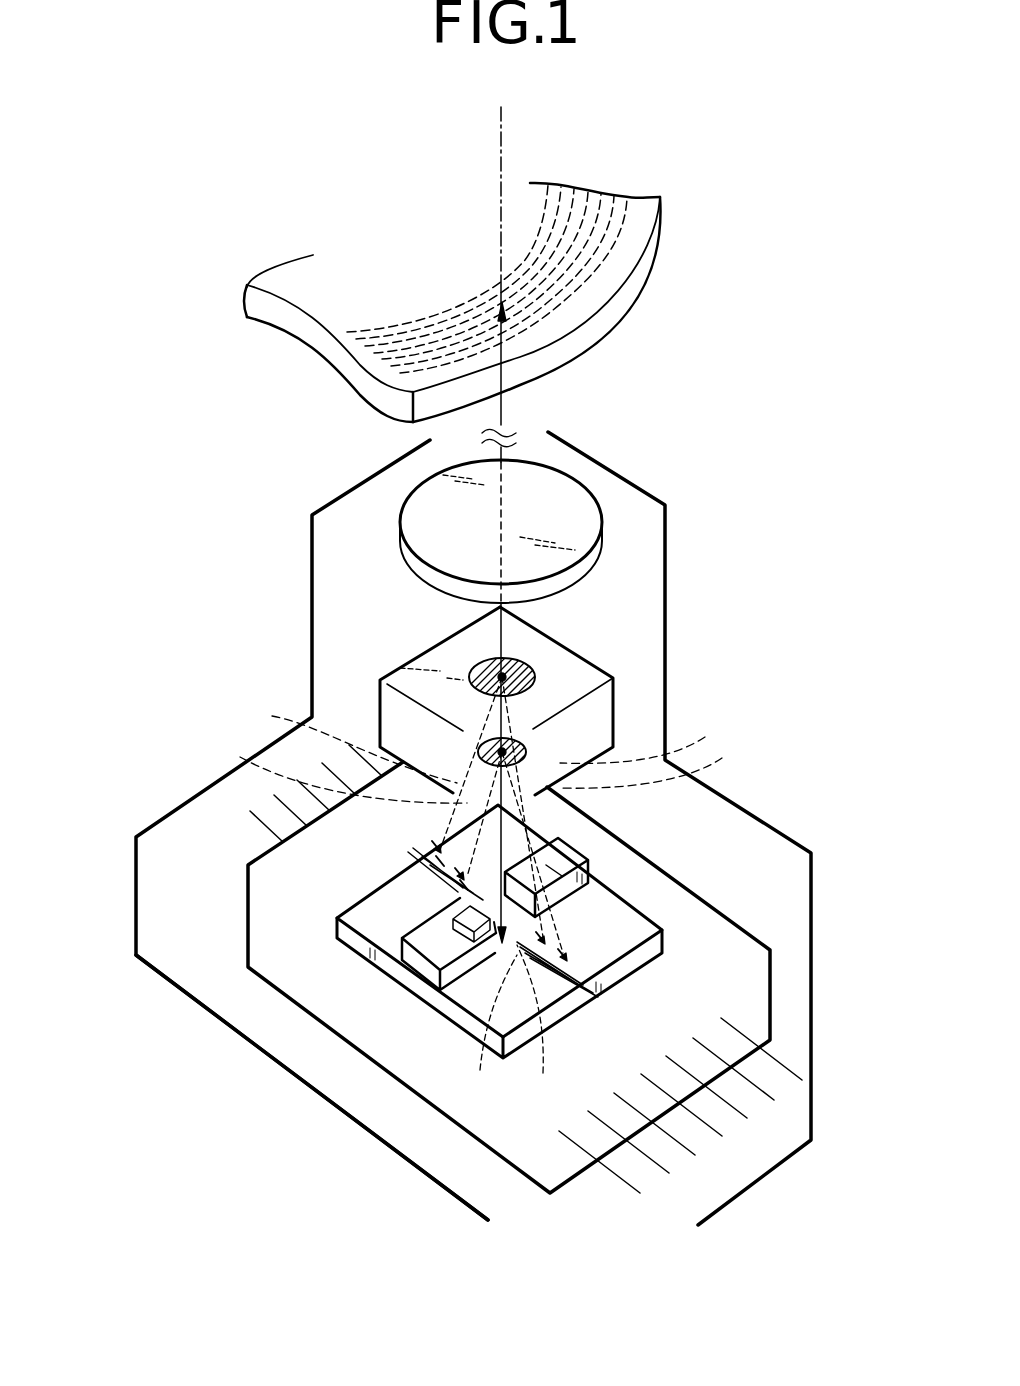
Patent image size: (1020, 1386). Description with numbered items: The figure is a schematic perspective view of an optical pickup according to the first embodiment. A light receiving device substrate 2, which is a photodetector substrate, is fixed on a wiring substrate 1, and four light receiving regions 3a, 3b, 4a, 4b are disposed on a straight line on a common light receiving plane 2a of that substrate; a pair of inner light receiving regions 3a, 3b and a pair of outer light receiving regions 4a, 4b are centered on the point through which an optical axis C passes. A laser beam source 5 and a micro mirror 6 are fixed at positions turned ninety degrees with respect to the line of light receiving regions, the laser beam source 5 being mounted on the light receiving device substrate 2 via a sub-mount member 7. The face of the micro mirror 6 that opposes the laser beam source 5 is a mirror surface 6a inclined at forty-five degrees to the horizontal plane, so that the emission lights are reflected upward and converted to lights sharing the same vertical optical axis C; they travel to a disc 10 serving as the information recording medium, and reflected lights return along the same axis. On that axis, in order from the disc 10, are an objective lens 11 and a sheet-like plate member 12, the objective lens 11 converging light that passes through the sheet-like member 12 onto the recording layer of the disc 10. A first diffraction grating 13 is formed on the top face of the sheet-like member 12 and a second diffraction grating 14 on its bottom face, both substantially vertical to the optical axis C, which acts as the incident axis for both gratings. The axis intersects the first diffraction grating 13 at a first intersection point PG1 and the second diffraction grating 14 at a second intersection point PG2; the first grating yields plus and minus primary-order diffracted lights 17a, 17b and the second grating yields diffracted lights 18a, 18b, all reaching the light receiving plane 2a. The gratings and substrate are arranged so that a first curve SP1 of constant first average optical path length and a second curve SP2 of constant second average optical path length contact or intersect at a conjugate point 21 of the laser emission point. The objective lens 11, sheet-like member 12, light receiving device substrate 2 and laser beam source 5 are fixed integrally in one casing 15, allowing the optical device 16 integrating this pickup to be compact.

The wiring substrate 1 is at (513, 1133).
The light receiving device substrate 2 is at (345, 928).
The light receiving plane 2a is at (387, 917).
The inner light receiving region 3a is at (545, 945).
The inner light receiving region 3b is at (445, 908).
The outer light receiving region 4a is at (577, 970).
The outer light receiving region 4b is at (430, 848).
The laser beam source 5 is at (500, 945).
The micro mirror 6 is at (567, 852).
The mirror surface 6a is at (560, 927).
The sub-mount member 7 is at (467, 925).
The disc 10 is at (650, 260).
The objective lens 11 is at (593, 500).
The sheet-like member 12 is at (390, 710).
The first diffraction grating 13 is at (536, 673).
The second diffraction grating 14 is at (533, 733).
The casing 15 is at (300, 1083).
The optical device 16 is at (826, 965).
The +primary-order diffracted light 17a is at (660, 738).
The −primary-order diffracted light 17b is at (336, 743).
The +primary-order diffracted light 18a is at (670, 768).
The −primary-order diffracted light 18b is at (323, 773).
The conjugate point 21 is at (487, 930).
The optical axis C is at (497, 170).
The first intersection point PG1 is at (497, 668).
The second intersection point PG2 is at (490, 743).
The first curve SP1 is at (550, 1035).
The second curve SP2 is at (482, 1037).